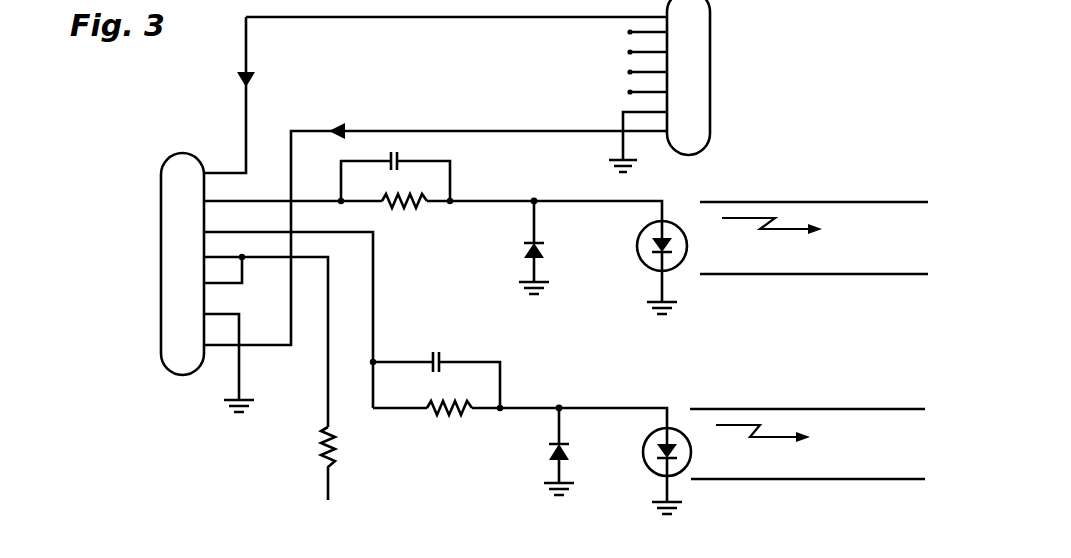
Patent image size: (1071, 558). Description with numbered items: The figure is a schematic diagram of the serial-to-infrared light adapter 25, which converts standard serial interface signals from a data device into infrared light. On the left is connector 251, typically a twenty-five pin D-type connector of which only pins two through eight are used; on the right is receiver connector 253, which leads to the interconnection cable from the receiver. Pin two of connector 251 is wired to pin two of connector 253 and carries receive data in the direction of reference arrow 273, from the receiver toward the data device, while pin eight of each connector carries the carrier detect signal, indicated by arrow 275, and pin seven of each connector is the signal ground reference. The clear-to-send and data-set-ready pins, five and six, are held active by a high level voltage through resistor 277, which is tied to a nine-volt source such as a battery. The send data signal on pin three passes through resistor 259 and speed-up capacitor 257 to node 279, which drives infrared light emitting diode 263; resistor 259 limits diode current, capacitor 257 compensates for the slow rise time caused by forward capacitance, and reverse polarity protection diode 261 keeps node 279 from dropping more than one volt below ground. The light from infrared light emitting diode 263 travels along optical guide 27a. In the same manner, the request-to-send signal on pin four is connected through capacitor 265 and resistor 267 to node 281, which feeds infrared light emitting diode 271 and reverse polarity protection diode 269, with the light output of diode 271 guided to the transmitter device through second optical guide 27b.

The adapter 25 is at (238, 493).
The optical guide 27a is at (813, 276).
The second optical guide 27b is at (803, 408).
The connector 251 is at (161, 371).
The receiver connector 253 is at (713, 109).
The capacitor 257 is at (403, 155).
The resistor 259 is at (408, 207).
The diode 261 is at (521, 250).
The infrared light emitting diode 263 is at (676, 224).
The capacitor 265 is at (441, 353).
The resistor 267 is at (440, 415).
The reverse polarity protection diode 269 is at (546, 456).
The infrared light emitting diode 271 is at (645, 449).
The reference arrow 273 is at (256, 83).
The signal direction arrow 275 is at (346, 124).
The resistor 277 is at (320, 452).
The node 279 is at (536, 198).
The node 281 is at (565, 405).